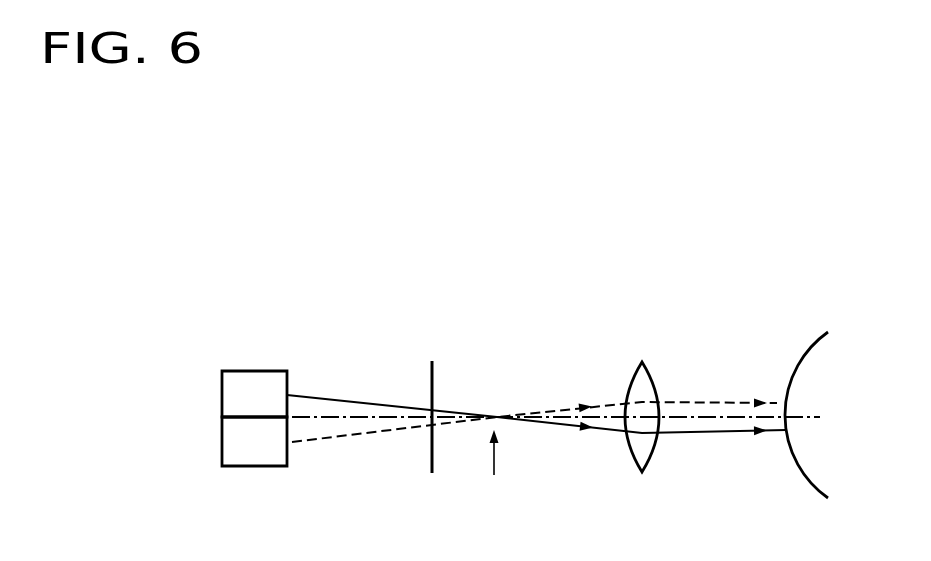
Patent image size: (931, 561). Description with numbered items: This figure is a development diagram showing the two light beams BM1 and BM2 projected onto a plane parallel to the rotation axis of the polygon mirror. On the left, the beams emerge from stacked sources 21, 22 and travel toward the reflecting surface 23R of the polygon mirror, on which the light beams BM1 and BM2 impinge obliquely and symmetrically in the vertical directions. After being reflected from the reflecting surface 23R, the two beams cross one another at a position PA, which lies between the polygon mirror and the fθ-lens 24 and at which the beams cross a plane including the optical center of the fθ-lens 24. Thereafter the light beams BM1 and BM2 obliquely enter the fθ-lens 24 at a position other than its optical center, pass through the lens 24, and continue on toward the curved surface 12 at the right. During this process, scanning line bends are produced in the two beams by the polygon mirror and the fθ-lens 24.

The eye / retina 12 is at (813, 343).
The first light source 21 is at (221, 397).
The second light source 22 is at (221, 442).
The reflecting surface 23R is at (435, 372).
The fθ-lens 24 is at (648, 367).
The light beam BM1 is at (333, 398).
The light beam BM2 is at (340, 435).
The position PA is at (494, 475).